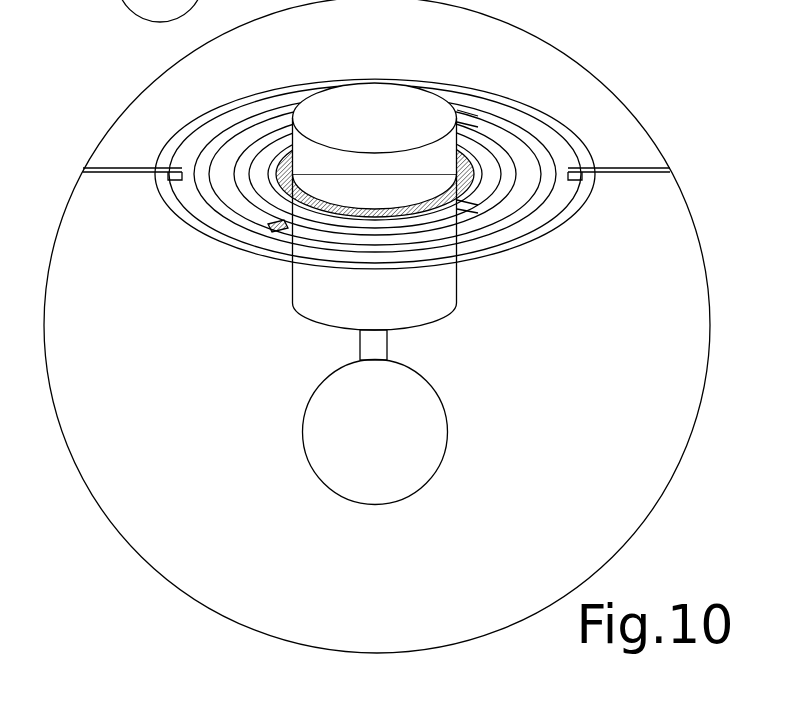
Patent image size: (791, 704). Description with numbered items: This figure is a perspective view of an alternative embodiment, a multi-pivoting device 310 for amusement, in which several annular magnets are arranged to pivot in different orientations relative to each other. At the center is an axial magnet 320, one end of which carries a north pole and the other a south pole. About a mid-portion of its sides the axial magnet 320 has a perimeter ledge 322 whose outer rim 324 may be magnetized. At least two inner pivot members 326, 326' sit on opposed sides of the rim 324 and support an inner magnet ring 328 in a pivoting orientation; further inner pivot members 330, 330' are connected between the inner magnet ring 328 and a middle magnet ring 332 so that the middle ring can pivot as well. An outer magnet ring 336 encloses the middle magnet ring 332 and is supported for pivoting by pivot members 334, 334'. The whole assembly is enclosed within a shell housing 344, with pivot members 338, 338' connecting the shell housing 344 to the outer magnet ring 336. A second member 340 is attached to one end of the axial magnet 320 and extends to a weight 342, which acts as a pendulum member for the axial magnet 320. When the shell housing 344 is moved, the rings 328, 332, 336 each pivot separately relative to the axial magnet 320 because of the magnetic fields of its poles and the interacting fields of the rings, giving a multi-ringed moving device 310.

The multi-pivoting device 310 is at (116, 68).
The axial magnet 320 is at (316, 304).
The perimeter ledge 322 is at (276, 186).
The outer rim 324 is at (500, 135).
The inner pivot member 326 is at (375, 221).
The inner pivot member 326' is at (375, 116).
The inner magnet ring 328 is at (537, 134).
The coil 330 is at (375, 112).
The coil 330' is at (352, 225).
The middle magnet ring 332 is at (473, 237).
The pivot member 334 is at (613, 187).
The pivot member 334' is at (139, 188).
The outer magnet ring 336 is at (213, 115).
The pivot member 338 is at (659, 156).
The pivot member 338' is at (95, 159).
The second member 340 is at (360, 350).
The weight 342 is at (358, 465).
The shell housing 344 is at (575, 53).